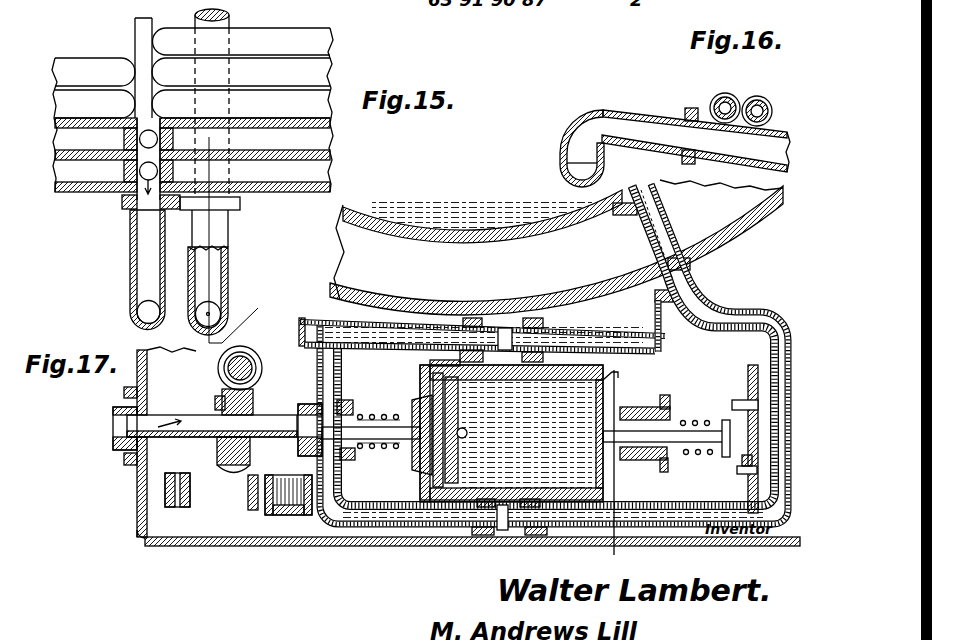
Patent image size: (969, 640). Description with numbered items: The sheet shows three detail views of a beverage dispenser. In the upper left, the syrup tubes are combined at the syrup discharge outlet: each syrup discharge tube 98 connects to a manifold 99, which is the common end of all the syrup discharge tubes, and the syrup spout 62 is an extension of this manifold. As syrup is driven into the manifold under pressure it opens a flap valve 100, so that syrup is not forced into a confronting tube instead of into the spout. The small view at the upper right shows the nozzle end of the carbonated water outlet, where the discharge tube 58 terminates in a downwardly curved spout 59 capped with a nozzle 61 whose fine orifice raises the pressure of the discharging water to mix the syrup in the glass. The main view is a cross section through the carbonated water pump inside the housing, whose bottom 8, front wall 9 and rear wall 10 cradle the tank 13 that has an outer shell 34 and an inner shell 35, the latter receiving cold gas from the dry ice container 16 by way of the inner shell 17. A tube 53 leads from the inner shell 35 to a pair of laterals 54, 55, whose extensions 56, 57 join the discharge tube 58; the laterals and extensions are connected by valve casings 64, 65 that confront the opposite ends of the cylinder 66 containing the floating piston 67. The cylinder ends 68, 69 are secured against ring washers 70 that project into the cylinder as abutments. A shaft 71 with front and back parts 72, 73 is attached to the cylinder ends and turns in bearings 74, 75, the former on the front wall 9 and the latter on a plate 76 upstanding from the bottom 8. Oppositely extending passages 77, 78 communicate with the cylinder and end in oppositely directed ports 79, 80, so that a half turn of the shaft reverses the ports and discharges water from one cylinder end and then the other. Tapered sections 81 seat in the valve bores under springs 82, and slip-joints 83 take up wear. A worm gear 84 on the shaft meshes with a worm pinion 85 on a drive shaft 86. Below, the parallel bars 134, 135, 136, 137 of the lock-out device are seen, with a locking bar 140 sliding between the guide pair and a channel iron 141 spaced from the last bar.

In FIG. 17, the bottom 8 is at (250, 509).
In FIG. 17, the front wall 9 is at (138, 488).
In FIG. 17, the rear wall 10 is at (657, 352).
In FIG. 17, the tank 13 is at (720, 225).
In FIG. 15, the dry ice container 16 is at (212, 137).
In FIG. 15, the inner shell 17 is at (407, 0).
In FIG. 17, the outer shell 34 is at (402, 297).
In FIG. 17, the inner shell 35 is at (397, 222).
In FIG. 17, the tube 53 is at (703, 323).
In FIG. 17, the lateral 54 is at (662, 528).
In FIG. 17, the lateral 55 is at (322, 518).
In FIG. 17, the extension 56 is at (603, 395).
In FIG. 17, the extension 57 is at (322, 368).
In FIG. 17, the discharge tube 58 is at (410, 342).
In FIG. 15, the spout 59 is at (192, 300).
In FIG. 16, the spout 59 is at (642, 110).
In FIG. 15, the nozzle 61 is at (200, 312).
In FIG. 16, the nozzle 61 is at (574, 163).
In FIG. 15, the spout 62 is at (192, 250).
In FIG. 17, the valve casing 64 is at (670, 410).
In FIG. 17, the valve casing 65 is at (336, 388).
In FIG. 17, the cylinder 66 is at (430, 523).
In FIG. 17, the floating piston 67 is at (440, 470).
In FIG. 17, the cylinder end 68 is at (604, 386).
In FIG. 17, the cylinder end 69 is at (428, 403).
In FIG. 17, the ring washer 70 is at (420, 393).
In FIG. 17, the shaft 71 is at (117, 448).
In FIG. 17, the front part 72 is at (180, 437).
In FIG. 17, the back part 73 is at (737, 468).
In FIG. 17, the bearing 74 is at (114, 428).
In FIG. 17, the bearing 75 is at (728, 419).
In FIG. 17, the plate 76 is at (756, 366).
In FIG. 17, the passage 77 is at (392, 448).
In FIG. 17, the passage 78 is at (612, 473).
In FIG. 17, the port 79 is at (312, 403).
In FIG. 17, the port 80 is at (668, 472).
In FIG. 17, the tapered section 81 is at (303, 413).
In FIG. 17, the spring 82 is at (390, 415).
In FIG. 17, the slip-joint 83 is at (547, 321).
In FIG. 17, the worm gear 84 is at (217, 449).
In FIG. 17, the worm pinion 85 is at (221, 355).
In FIG. 17, the drive shaft 86 is at (222, 372).
In FIG. 15, the discharge tube 98 is at (90, 147).
In FIG. 15, the manifold 99 is at (135, 37).
In FIG. 15, the flap valve 100 is at (132, 244).
In FIG. 17, the bar 134 is at (167, 497).
In FIG. 17, the bar 135 is at (182, 507).
In FIG. 17, the bar 136 is at (207, 528).
In FIG. 17, the bar 137 is at (250, 500).
In FIG. 17, the locking bar 140 is at (148, 539).
In FIG. 17, the channel iron 141 is at (278, 518).